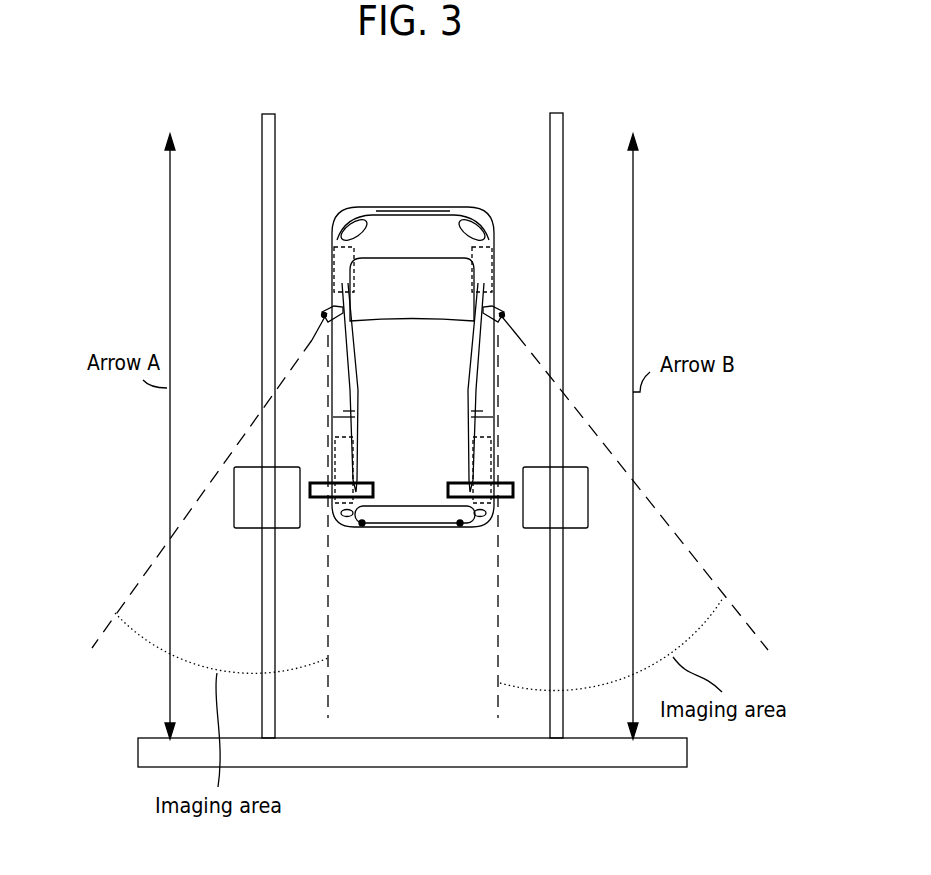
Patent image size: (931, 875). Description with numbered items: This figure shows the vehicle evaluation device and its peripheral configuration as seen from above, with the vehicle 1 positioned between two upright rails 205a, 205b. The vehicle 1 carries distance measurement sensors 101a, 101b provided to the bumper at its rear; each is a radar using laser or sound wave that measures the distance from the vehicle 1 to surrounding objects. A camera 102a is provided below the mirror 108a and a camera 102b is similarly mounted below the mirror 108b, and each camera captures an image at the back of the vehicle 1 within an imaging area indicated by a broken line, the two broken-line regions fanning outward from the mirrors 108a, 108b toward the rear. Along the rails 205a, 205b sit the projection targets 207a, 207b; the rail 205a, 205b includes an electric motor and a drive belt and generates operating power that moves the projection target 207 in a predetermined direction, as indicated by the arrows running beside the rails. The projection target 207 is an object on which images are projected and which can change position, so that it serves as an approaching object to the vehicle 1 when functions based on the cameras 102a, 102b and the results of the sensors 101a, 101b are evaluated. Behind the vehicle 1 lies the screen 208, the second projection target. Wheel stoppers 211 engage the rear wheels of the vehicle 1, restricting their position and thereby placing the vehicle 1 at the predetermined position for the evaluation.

The vehicle 1 is at (400, 236).
The distance measurement sensor 101a is at (362, 527).
The distance measurement sensor 101b is at (460, 527).
The camera 102a is at (322, 314).
The camera 102b is at (503, 316).
The mirror 108a is at (326, 307).
The mirror 108b is at (500, 307).
The rail 205a is at (262, 136).
The rail 205b is at (550, 141).
The projection target 207 is at (406, 546).
The projection target 207a is at (235, 528).
The projection target 207b is at (575, 528).
The screen 208 is at (538, 768).
The wheel stopper 211 is at (462, 497).